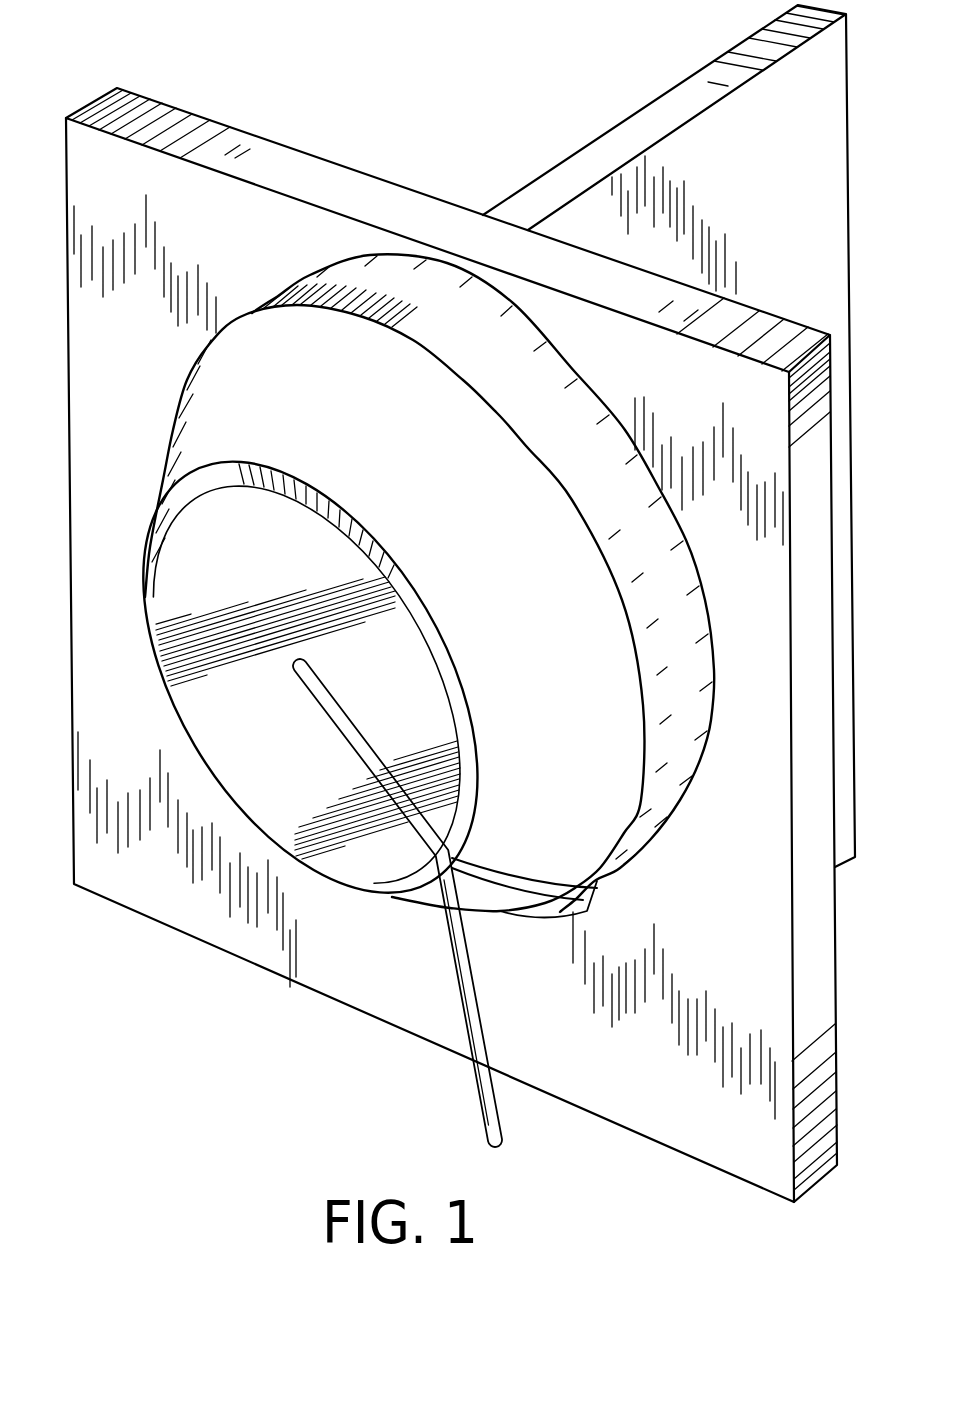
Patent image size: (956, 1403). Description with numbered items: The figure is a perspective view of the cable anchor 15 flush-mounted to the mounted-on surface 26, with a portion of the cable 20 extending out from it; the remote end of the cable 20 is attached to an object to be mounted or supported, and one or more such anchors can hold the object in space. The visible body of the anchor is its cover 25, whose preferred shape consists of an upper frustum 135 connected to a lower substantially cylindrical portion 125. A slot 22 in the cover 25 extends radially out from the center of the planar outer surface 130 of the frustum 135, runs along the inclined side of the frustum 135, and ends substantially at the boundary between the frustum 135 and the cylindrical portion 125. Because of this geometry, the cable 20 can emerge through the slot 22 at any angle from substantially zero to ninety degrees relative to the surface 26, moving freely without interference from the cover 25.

The cable anchor 15 is at (460, 603).
The cable 20 is at (478, 1089).
The slot 22 is at (517, 888).
The cover 25 is at (499, 555).
The mounted-on surface 26 is at (555, 1030).
The lower substantially cylindrical portion 125 is at (645, 836).
The planar outer surface 130 is at (294, 775).
The upper frustum 135 is at (420, 896).